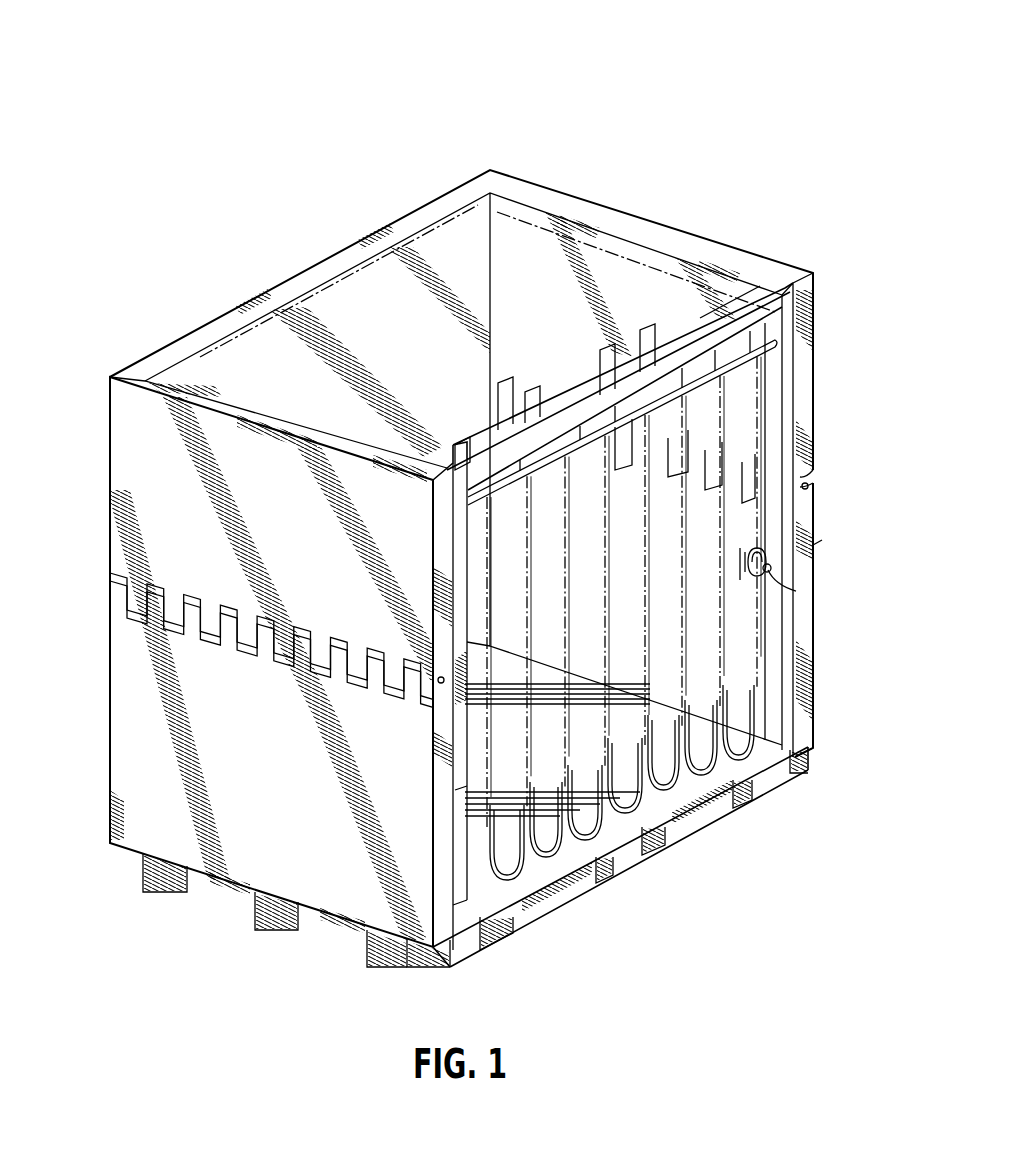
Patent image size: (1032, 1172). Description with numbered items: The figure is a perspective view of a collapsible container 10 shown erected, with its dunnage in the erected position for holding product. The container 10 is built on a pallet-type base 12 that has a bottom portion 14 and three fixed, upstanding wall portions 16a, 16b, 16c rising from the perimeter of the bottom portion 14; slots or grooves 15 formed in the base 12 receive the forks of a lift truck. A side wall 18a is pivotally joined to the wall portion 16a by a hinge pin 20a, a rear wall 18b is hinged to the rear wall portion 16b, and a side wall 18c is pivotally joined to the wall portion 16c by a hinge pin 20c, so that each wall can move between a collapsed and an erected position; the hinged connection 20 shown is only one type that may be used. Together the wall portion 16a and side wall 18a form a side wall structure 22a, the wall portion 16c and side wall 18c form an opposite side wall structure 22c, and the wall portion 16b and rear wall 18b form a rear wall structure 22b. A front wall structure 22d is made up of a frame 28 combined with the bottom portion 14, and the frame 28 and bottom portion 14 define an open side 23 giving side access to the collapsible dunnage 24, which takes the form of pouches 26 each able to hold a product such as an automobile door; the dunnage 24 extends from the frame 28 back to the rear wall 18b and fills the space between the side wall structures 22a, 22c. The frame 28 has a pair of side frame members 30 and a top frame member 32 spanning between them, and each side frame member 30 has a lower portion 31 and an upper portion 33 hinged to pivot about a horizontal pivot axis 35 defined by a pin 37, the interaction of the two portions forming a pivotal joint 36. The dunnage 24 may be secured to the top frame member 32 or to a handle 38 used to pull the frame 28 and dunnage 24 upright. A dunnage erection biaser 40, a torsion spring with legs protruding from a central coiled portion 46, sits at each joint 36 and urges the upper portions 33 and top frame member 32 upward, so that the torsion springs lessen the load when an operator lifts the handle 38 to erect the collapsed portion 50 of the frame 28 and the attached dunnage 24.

The container 10 is at (788, 73).
The base 12 is at (390, 967).
The bottom portion 14 is at (470, 922).
The slots or grooves 15 is at (235, 888).
The wall portion 16a is at (276, 802).
The wall portion 16b is at (466, 528).
The wall portion 16c is at (803, 664).
The side wall 18a is at (276, 512).
The rear wall 18b is at (386, 330).
The side wall 18c is at (546, 285).
The hinged panel assembly 20 is at (483, 144).
The hinge pin 20a is at (440, 684).
The hinge pin 20c is at (816, 487).
The side wall structure 22a is at (106, 617).
The rear wall structure 22b is at (270, 297).
The side wall structure 22c is at (613, 201).
The front wall structure 22d is at (816, 421).
The open side 23 is at (833, 767).
The dunnage 24 is at (650, 858).
The pouches 26 is at (722, 827).
The frame 28 is at (679, 327).
The side frame members 30 is at (797, 633).
The lower portion 31 is at (790, 727).
The top frame member 32 is at (727, 317).
The upper portion 33 is at (796, 371).
The horizontal pivot axis 35 is at (860, 518).
The pivotal joint 36 is at (748, 548).
The pin 37 is at (796, 591).
The handle 38 is at (493, 468).
The dunnage erection biaser 40 is at (745, 560).
The central coiled portion 46 is at (740, 552).
The collapsed portion 50 is at (579, 389).